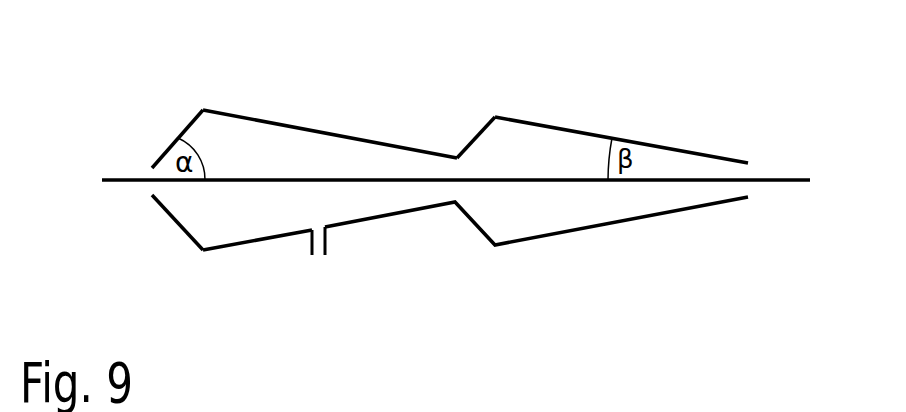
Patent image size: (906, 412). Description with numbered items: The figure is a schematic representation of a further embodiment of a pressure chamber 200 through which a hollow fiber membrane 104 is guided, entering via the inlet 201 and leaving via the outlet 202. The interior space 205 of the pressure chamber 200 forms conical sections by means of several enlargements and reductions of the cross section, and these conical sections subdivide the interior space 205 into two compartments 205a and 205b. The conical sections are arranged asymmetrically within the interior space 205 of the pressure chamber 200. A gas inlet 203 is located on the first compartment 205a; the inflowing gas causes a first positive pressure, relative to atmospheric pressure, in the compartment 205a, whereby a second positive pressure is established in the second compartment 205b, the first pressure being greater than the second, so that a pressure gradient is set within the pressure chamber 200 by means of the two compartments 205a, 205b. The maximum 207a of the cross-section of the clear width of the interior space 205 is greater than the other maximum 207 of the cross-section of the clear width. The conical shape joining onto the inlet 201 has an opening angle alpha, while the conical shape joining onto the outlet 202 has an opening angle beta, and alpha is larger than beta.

The hollow fiber membrane 104 is at (777, 182).
The pressure chamber 200 is at (317, 128).
The inlet 201 is at (150, 170).
The outlet 202 is at (747, 175).
The gas inlet 203 is at (317, 257).
The interior space 205 is at (413, 198).
The first compartment 205a is at (225, 132).
The second compartment 205b is at (543, 135).
The maximum of the cross-section of the clear width 207 is at (203, 252).
The maximum of the cross-section of the clear width 207a is at (495, 117).